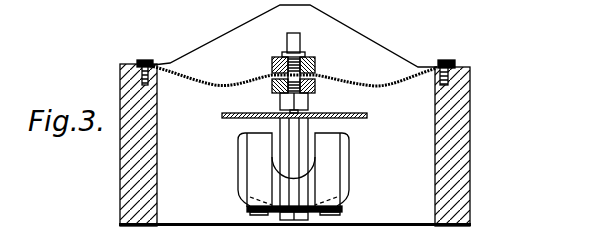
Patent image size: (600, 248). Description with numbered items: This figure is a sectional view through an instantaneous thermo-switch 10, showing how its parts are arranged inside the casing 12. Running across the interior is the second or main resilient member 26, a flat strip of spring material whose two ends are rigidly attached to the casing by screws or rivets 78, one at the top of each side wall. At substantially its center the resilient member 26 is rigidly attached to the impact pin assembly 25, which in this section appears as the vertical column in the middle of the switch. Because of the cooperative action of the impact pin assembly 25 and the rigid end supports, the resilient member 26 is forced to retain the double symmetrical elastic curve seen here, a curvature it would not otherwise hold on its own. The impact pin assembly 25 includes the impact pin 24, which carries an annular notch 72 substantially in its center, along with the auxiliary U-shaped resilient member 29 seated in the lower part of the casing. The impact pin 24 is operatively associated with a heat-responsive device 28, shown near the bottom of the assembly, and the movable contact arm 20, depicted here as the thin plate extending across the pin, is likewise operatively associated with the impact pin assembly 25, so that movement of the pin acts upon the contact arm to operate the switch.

The instantaneous thermo-switch 10 is at (94, 75).
The casing 12 is at (462, 130).
The movable contact arm 20 is at (225, 118).
The impact pin 24 is at (309, 100).
The impact pin assembly 25 is at (305, 55).
The second or main resilient member 26 is at (190, 78).
The heat-responsive device 28 is at (343, 208).
The auxiliary U-shaped resilient member 29 is at (238, 178).
The annular notch 72 is at (283, 112).
The screws or rivets 78 is at (143, 61).